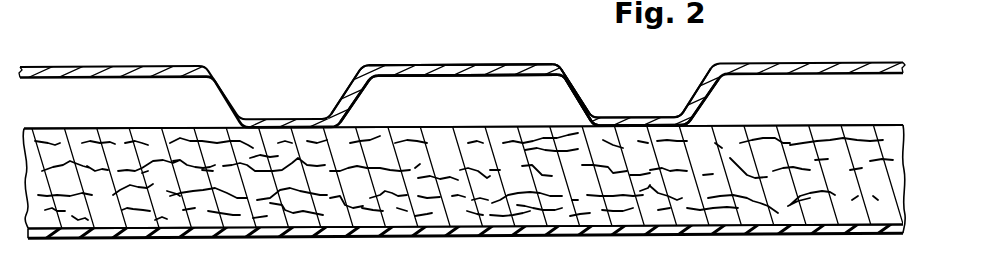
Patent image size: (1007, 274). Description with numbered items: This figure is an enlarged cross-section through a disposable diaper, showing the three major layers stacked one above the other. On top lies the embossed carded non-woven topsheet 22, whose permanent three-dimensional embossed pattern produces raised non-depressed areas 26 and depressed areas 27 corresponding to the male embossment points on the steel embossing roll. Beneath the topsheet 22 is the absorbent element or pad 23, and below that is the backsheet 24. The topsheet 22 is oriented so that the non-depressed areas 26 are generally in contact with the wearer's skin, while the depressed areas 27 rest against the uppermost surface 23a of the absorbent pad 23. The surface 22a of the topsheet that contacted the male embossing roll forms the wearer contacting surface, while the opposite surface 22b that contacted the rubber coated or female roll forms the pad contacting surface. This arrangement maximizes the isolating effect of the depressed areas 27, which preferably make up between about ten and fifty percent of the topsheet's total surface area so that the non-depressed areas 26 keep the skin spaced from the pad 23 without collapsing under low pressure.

The topsheet 22 is at (93, 67).
The surface of the embossed topsheet which contacts the male embossing roll 22a is at (400, 65).
The surface which contacts the rubber coated roll or female roll 22b is at (408, 77).
The absorbent element or pad 23 is at (153, 145).
The uppermost surface of the absorbent pad element 23a is at (110, 129).
The backsheet 24 is at (115, 231).
The non-depressed areas 26 is at (490, 64).
The depressed areas 27 is at (635, 118).